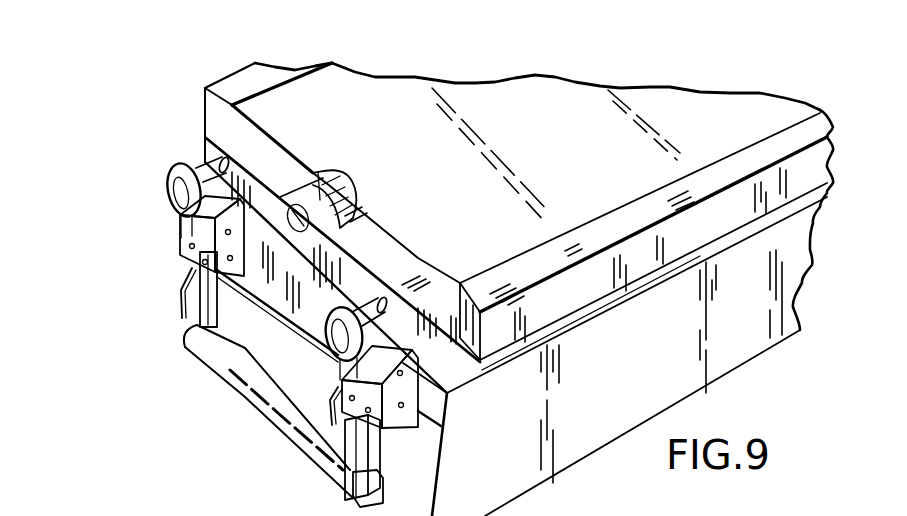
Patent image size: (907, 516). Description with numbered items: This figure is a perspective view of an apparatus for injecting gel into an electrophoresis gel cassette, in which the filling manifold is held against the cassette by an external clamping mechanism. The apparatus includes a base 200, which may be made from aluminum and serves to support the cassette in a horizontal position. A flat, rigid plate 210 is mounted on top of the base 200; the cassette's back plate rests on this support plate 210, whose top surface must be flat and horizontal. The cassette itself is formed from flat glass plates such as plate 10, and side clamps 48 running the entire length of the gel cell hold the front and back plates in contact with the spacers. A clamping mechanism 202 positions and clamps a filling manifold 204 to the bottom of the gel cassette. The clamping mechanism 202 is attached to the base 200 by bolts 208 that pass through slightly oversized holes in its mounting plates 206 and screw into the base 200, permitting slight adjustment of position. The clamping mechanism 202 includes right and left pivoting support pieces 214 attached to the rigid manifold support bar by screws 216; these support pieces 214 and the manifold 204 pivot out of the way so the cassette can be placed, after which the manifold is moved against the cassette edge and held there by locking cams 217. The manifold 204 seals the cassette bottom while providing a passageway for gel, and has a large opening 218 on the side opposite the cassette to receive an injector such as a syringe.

The flat plate 10 is at (582, 148).
The side clamp 48 is at (255, 78).
The base 200 is at (802, 282).
The clamping mechanism 202 is at (278, 453).
The filling manifold 204 is at (398, 248).
The mounting plate 206 is at (258, 173).
The bolt 208 is at (175, 338).
The flat rigid plate 210 is at (608, 308).
The pivoting support piece 214 is at (177, 217).
The screw 216 is at (178, 172).
The locking cam 217 is at (181, 295).
The opening 218 is at (357, 200).